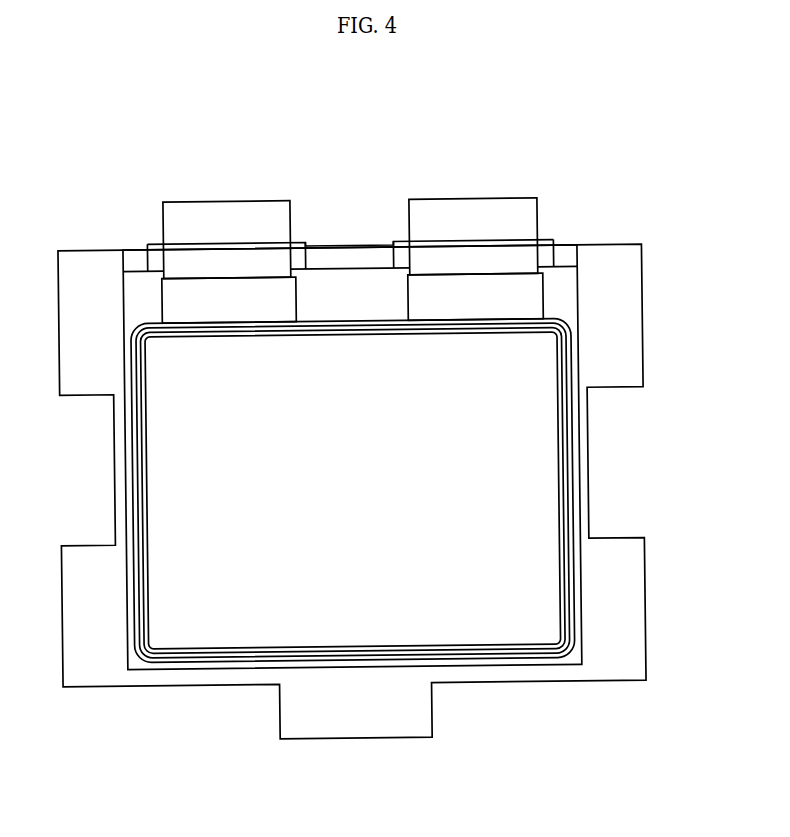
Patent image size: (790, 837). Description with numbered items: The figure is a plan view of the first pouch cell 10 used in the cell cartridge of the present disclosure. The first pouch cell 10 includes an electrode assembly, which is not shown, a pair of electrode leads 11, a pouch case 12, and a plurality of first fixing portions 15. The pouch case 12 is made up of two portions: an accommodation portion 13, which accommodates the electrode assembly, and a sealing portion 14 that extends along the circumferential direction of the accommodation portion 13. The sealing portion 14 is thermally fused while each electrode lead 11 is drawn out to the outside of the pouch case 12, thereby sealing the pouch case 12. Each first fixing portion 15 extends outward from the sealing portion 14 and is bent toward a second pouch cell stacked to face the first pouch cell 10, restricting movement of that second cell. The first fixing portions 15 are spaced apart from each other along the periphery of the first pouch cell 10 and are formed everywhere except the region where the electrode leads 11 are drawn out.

The first pouch cell 10 is at (224, 133).
The electrode lead 11 is at (496, 211).
The pouch case 12 is at (402, 457).
The accommodation portion 13 is at (540, 492).
The sealing portion 14 is at (586, 436).
The first fixing portion 15 is at (630, 316).